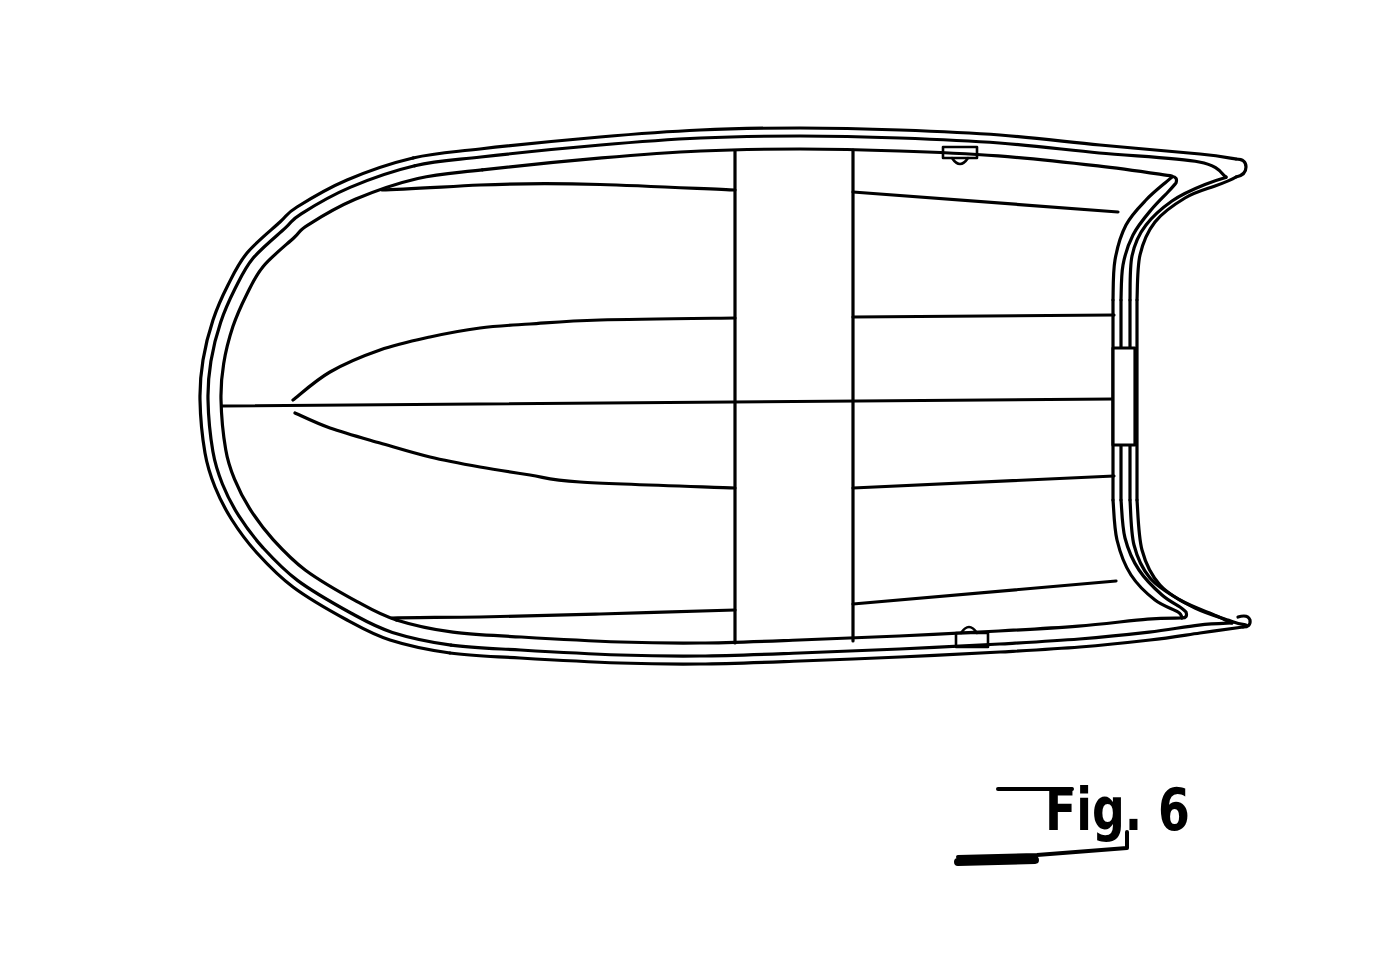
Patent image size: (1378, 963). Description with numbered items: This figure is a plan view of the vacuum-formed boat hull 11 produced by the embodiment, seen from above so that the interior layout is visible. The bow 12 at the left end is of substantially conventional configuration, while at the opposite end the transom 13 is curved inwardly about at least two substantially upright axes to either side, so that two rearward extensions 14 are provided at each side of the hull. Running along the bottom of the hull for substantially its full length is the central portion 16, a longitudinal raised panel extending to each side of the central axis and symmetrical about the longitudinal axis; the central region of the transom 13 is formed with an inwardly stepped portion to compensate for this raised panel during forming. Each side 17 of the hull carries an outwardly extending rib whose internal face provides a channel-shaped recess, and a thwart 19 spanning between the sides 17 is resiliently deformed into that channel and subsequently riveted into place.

The boat hull 11 is at (688, 110).
The bow 12 is at (257, 315).
The transom 13 is at (1192, 383).
The rearward extensions 14 is at (1229, 185).
The central portion 16 is at (994, 378).
The side 17 is at (944, 138).
The thwart 19 is at (812, 381).